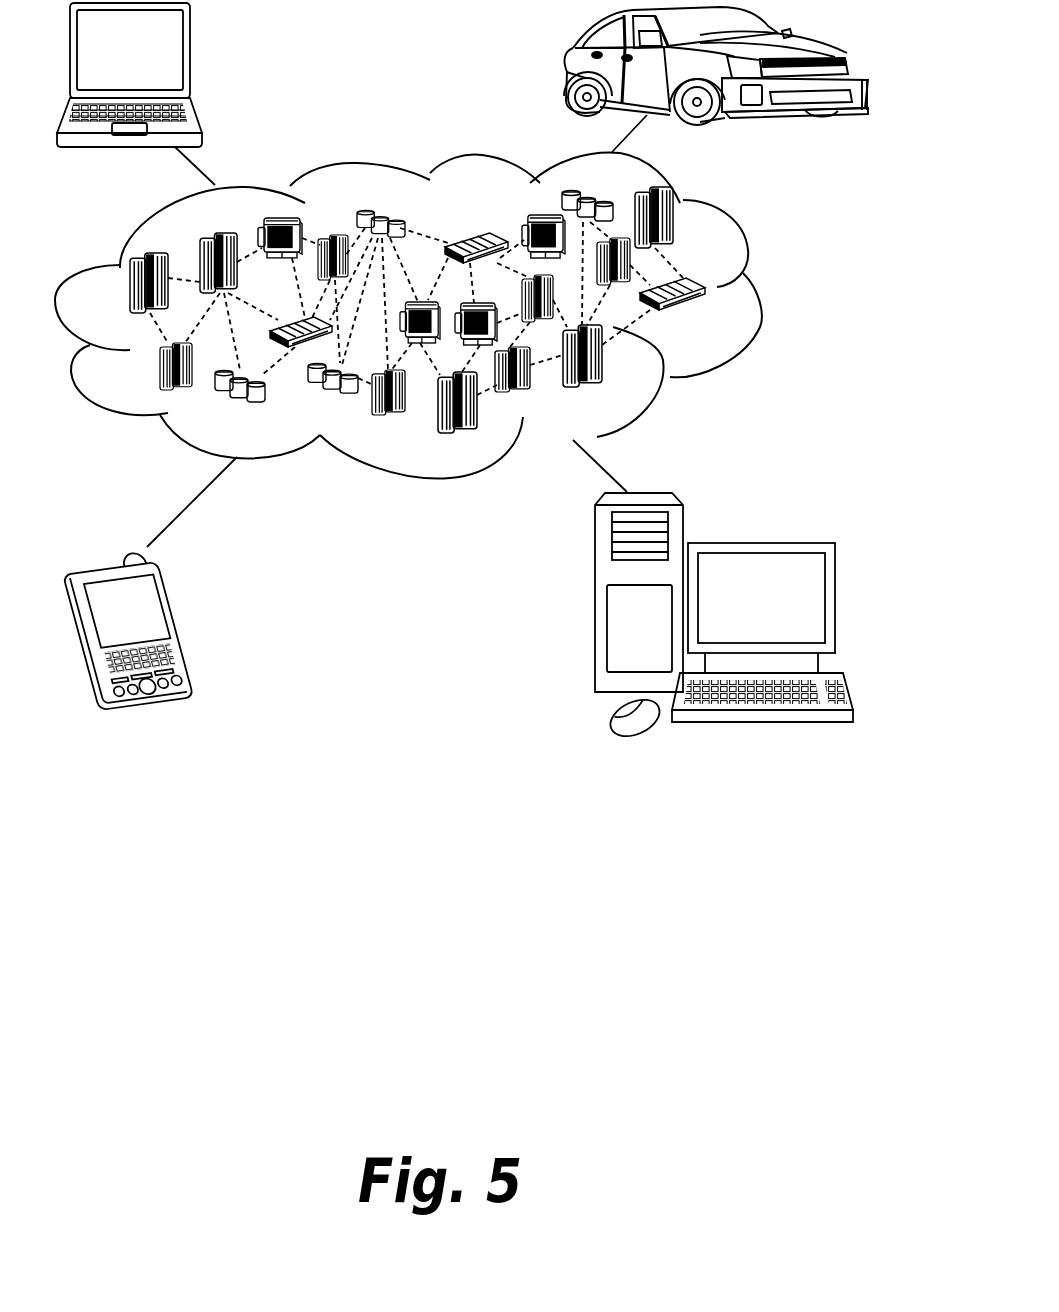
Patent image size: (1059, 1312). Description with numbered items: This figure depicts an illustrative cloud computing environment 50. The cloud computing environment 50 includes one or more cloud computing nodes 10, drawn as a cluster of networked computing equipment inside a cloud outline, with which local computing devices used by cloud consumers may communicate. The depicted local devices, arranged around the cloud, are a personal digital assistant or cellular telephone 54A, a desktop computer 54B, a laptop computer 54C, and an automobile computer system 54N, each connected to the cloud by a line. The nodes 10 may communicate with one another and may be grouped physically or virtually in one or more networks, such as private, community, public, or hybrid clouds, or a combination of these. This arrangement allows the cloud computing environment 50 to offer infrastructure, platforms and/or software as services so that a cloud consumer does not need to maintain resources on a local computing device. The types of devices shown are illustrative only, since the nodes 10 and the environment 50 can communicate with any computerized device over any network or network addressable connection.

The cloud computing node 10 is at (708, 320).
The cloud computing environment 50 is at (758, 292).
The personal digital assistant or cellular telephone 54A is at (180, 624).
The desktop computer 54B is at (760, 543).
The laptop computer 54C is at (190, 58).
The automobile computer system 54N is at (568, 70).